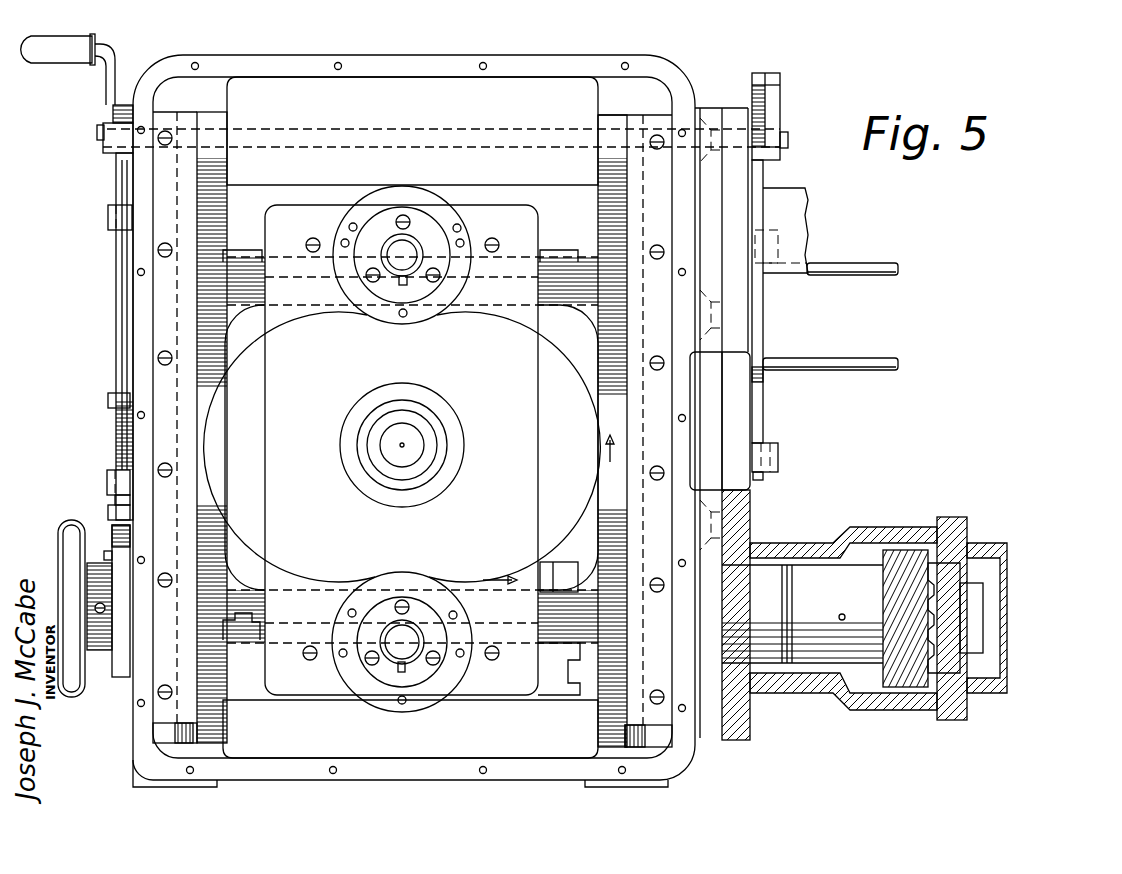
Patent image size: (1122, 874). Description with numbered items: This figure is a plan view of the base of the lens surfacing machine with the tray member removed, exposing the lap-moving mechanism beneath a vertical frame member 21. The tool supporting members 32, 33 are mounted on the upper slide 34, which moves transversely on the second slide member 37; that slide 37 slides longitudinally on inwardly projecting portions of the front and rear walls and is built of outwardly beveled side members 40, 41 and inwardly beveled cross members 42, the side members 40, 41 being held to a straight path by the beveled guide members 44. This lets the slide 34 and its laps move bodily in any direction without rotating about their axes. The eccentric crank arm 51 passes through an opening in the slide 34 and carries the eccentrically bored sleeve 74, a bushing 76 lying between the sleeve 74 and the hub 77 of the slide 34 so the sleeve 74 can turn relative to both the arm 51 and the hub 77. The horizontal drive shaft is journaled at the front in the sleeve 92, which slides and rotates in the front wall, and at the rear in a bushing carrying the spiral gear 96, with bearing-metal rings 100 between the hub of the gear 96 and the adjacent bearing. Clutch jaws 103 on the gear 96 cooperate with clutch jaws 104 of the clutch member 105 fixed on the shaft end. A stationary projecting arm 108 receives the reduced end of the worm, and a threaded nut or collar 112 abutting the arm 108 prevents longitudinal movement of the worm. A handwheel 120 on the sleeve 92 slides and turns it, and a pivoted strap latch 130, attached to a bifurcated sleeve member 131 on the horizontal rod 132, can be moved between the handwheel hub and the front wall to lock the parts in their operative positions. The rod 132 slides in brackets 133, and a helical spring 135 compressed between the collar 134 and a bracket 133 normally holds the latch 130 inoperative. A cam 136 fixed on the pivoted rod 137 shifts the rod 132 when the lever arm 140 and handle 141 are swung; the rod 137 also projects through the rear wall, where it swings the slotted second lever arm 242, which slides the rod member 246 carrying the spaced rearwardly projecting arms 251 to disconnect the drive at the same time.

The vertical frame member 21 is at (798, 241).
The tool supporting member 32 is at (410, 688).
The tool supporting member 33 is at (420, 292).
The slide member 34 is at (530, 359).
The second slide member 37 is at (600, 400).
The side member 40 is at (218, 736).
The side member 41 is at (614, 737).
The cross member 42 is at (253, 632).
The beveled guide member 44 is at (165, 708).
The eccentric crank arm 51 is at (403, 432).
The eccentrically bored sleeve 74 is at (426, 452).
The bushing 76 is at (441, 440).
The hub 77 is at (443, 416).
The sleeve 92 is at (118, 655).
The spiral gear 96 is at (900, 575).
The bearing rings 100 is at (787, 567).
The clutch jaws 103 is at (1010, 659).
The clutch jaws 104 is at (975, 600).
The clutch member 105 is at (960, 584).
The stationary projecting arm 108 is at (548, 690).
The threaded nut or collar 112 is at (563, 568).
The handwheel 120 is at (75, 692).
The pivoted latch 130 is at (106, 553).
The bifurcated sleeve member 131 is at (107, 513).
The horizontal rod 132 is at (118, 311).
The bracket 133 is at (108, 215).
The collar 134 is at (108, 400).
The helical spring 135 is at (115, 420).
The cam 136 is at (124, 104).
The rod 137 is at (97, 132).
The lever arm 140 is at (107, 67).
The handle 141 is at (40, 40).
The second lever arm 242 is at (780, 90).
The rod member 246 is at (760, 348).
The rearwardly projecting arms 251 is at (830, 358).